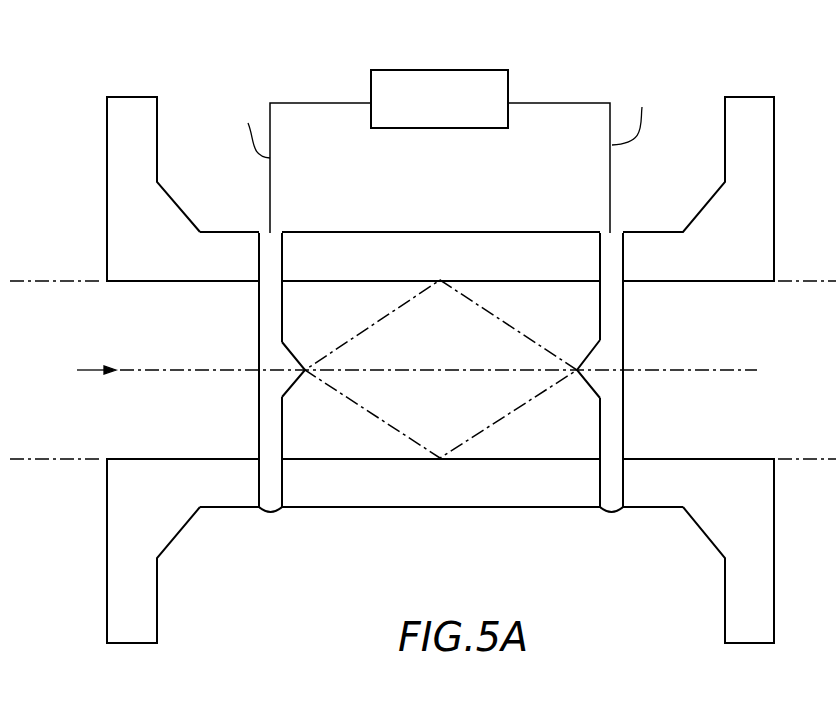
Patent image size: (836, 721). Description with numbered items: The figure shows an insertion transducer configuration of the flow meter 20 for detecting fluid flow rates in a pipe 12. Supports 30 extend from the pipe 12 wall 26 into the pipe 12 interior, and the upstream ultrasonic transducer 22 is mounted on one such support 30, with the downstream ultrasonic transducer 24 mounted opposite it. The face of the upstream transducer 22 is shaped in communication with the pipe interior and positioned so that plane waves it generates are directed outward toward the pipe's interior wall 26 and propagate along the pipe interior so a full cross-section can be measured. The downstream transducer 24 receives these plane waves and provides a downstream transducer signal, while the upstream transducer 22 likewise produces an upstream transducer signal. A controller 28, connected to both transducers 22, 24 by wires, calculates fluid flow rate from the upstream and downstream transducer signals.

The pipe 12 is at (62, 248).
The flow meter 20 is at (534, 76).
The upstream ultrasonic transducer 22 is at (295, 353).
The downstream ultrasonic transducer 24 is at (583, 382).
The interior wall 26 is at (715, 283).
The controller 28 is at (403, 128).
The support 30 is at (258, 413).